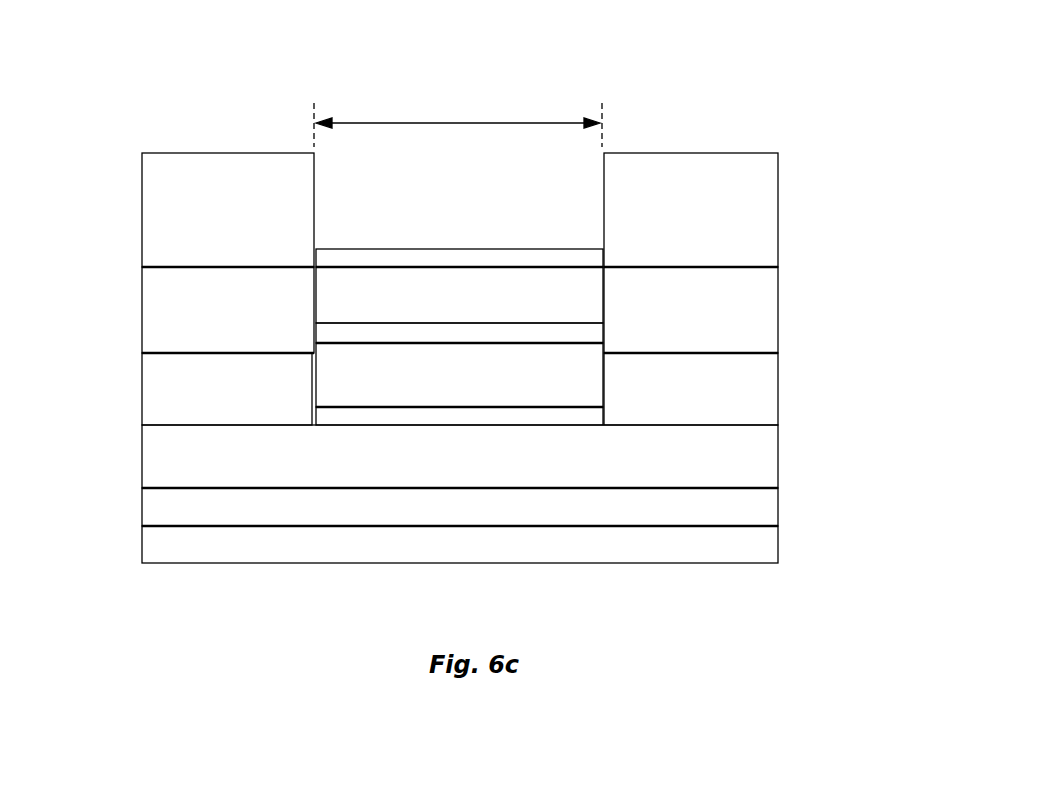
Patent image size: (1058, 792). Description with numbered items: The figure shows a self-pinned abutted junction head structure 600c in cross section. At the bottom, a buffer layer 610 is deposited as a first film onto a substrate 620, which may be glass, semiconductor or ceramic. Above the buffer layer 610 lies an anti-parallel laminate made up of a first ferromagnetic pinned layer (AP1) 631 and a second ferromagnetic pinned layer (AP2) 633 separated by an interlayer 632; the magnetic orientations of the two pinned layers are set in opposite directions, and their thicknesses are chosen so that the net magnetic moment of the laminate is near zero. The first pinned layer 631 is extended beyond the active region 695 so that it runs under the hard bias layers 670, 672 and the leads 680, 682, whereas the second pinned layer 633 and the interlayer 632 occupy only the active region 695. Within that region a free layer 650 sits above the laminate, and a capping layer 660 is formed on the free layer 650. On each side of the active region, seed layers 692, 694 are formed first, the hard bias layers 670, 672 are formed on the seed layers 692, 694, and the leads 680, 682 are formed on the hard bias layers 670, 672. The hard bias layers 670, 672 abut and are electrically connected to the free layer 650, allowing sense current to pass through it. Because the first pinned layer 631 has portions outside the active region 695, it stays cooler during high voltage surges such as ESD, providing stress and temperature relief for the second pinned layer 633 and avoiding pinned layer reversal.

The self-pinned abutted junction head structure 600c is at (778, 110).
The active region 695 is at (478, 122).
The lead 680 is at (147, 211).
The lead 682 is at (772, 196).
The hard bias layer 670 is at (147, 308).
The hard bias layer 672 is at (770, 305).
The seed layer 692 is at (140, 382).
The seed layer 694 is at (773, 397).
The capping layer 660 is at (459, 257).
The free layer 650 is at (549, 302).
The second ferromagnetic pinned layer (AP2) 633 is at (524, 382).
The interlayer 632 is at (593, 415).
The first ferromagnetic pinned layer (AP1) 631 is at (148, 457).
The buffer layer 610 is at (146, 508).
The substrate 620 is at (146, 546).